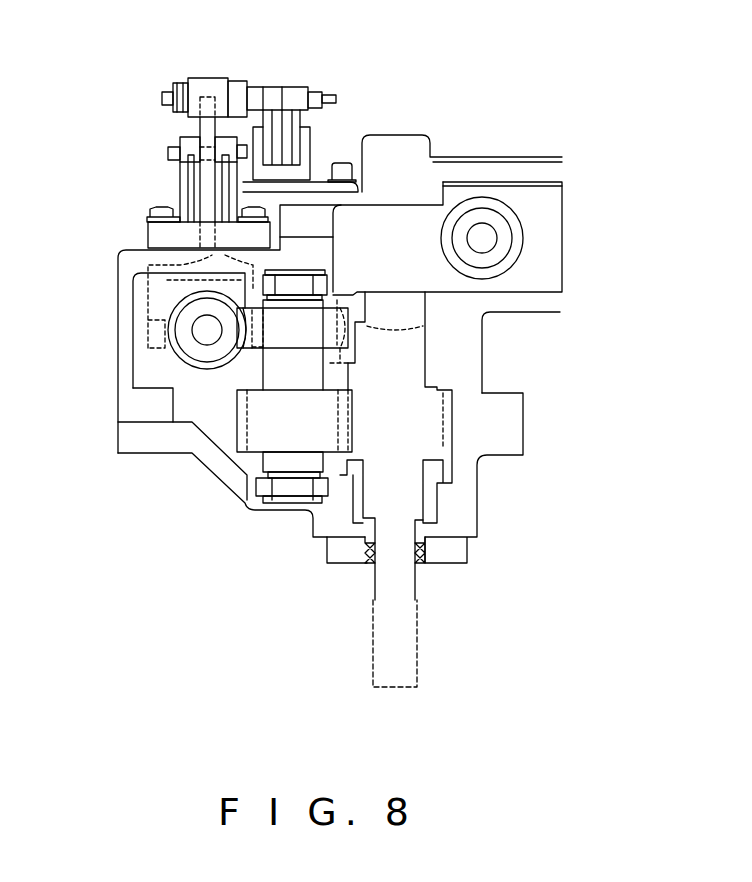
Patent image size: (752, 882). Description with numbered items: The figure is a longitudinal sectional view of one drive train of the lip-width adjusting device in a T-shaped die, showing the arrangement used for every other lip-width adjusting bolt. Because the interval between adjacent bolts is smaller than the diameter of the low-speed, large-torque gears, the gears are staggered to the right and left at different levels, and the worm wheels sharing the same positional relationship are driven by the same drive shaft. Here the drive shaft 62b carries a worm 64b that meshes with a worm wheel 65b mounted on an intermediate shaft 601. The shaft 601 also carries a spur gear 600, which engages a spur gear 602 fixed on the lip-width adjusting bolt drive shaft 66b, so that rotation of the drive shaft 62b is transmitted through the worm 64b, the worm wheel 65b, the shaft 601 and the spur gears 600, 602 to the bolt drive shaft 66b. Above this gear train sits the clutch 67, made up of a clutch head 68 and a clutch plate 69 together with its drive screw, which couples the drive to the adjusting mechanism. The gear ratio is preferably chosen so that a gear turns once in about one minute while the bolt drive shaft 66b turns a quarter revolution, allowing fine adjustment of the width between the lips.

The clutch 67 is at (200, 127).
The clutch head 68 is at (263, 90).
The clutch plate 69 is at (272, 128).
The worm wheel 65b is at (330, 318).
The drive shaft 62b is at (203, 330).
The worm 64b is at (185, 358).
The spur gear 600 is at (267, 435).
The shaft 601 is at (283, 367).
The spur gear 602 is at (425, 428).
The lip-width adjusting bolt drive shaft 66b is at (392, 577).